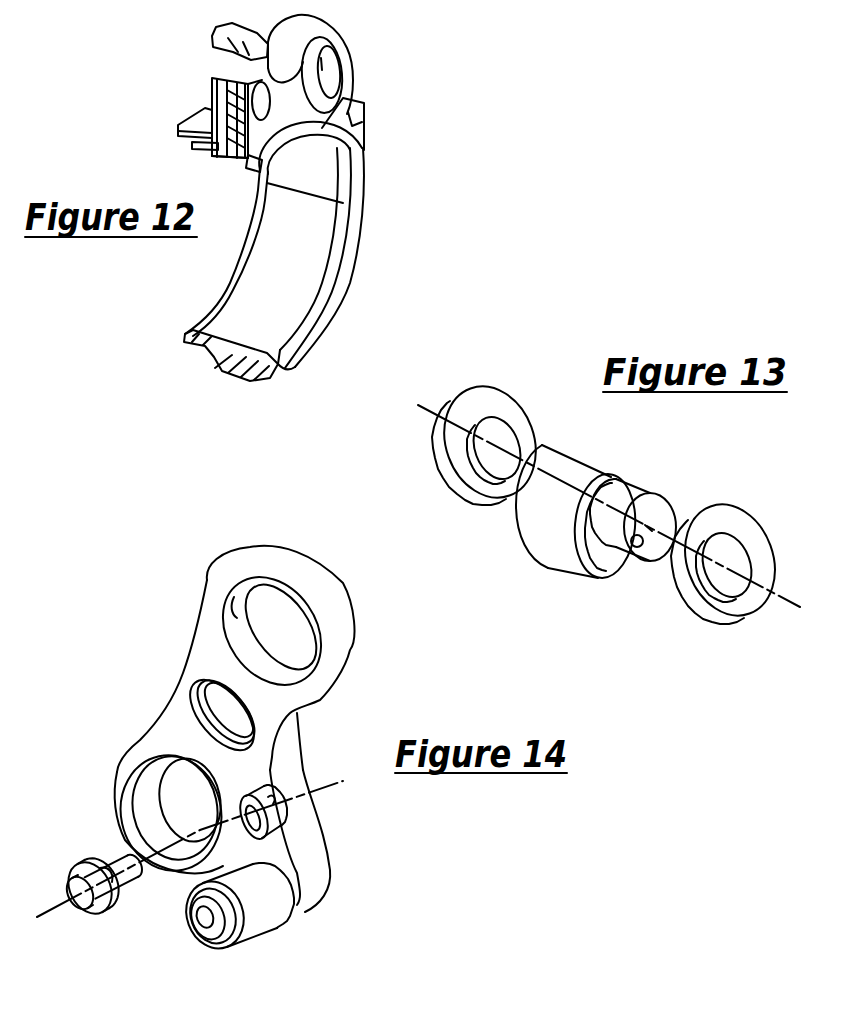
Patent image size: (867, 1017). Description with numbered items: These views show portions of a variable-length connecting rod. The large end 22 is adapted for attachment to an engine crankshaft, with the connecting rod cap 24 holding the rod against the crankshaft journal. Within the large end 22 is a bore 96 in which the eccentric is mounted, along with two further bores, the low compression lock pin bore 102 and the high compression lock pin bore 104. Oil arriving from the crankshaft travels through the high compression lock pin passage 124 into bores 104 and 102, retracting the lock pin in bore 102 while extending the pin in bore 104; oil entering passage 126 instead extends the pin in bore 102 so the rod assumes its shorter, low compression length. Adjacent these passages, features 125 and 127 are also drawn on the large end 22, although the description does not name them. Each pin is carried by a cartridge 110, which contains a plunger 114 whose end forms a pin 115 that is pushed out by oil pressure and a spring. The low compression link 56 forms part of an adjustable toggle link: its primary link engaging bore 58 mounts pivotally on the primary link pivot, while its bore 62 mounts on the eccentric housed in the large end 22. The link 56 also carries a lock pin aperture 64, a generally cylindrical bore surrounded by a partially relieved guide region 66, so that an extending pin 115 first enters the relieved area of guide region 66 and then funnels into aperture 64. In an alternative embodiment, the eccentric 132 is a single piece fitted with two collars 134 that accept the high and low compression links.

In FIG. 12, the large end 22 is at (366, 162).
In FIG. 12, the connecting rod cap 24 is at (350, 282).
In FIG. 12, the bore 96 is at (322, 68).
In FIG. 12, the low compression lock pin bore 102 is at (235, 62).
In FIG. 12, the high compression lock pin bore 104 is at (343, 100).
In FIG. 12, the high compression lock pin passage 124 is at (198, 147).
In FIG. 12, the flange 125 is at (190, 127).
In FIG. 12, the passage 126 is at (263, 162).
In FIG. 12, the post 127 is at (212, 86).
In FIG. 13, the eccentric 132 is at (550, 531).
In FIG. 13, the collars 134 is at (486, 390).
In FIG. 14, the low compression link 56 is at (180, 713).
In FIG. 14, the primary link engaging bore 58 is at (222, 620).
In FIG. 14, the bore 62 is at (147, 803).
In FIG. 14, the lock pin aperture 64 is at (287, 788).
In FIG. 14, the guide region 66 is at (287, 820).
In FIG. 14, the cartridge 110 is at (262, 949).
In FIG. 14, the plunger 114 is at (85, 850).
In FIG. 14, the pin 115 is at (125, 850).